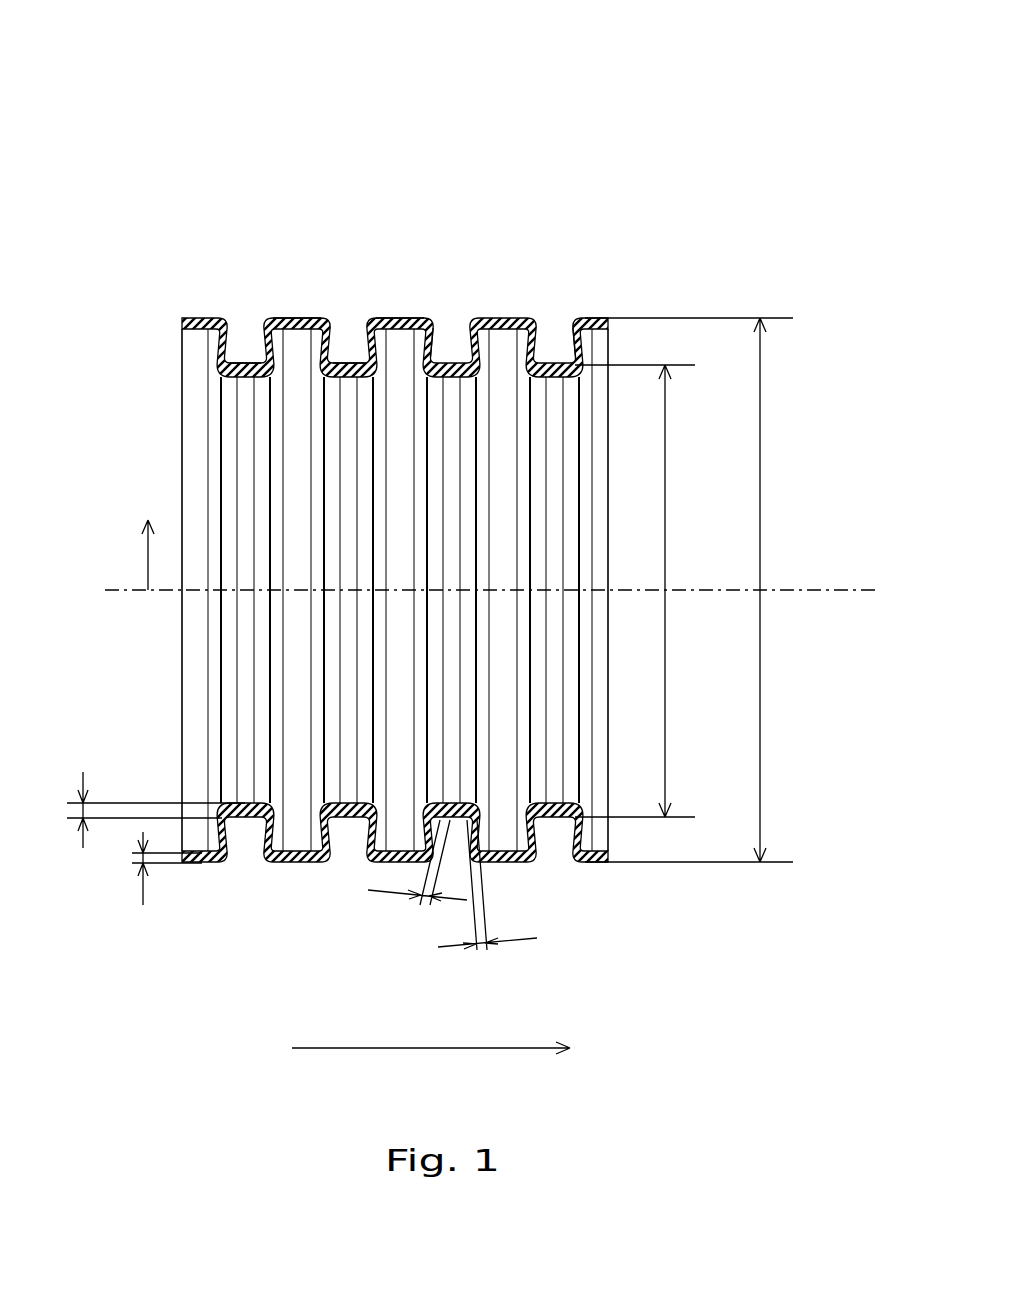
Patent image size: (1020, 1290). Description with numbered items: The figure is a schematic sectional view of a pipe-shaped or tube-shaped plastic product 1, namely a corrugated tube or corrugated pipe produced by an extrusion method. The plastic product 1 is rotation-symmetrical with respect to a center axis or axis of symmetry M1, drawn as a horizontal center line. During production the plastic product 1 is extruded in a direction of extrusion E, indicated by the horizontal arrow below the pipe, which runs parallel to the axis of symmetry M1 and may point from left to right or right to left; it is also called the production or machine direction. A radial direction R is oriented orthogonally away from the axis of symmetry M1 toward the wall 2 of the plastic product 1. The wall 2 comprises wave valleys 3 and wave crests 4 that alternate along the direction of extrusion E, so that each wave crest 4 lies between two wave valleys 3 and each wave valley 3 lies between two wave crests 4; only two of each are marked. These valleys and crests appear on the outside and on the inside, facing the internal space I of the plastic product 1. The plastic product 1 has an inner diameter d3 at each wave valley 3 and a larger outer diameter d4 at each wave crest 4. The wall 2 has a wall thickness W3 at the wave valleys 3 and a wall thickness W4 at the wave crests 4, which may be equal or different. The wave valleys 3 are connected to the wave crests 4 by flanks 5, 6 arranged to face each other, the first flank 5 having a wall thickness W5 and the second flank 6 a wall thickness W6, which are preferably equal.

The plastic product 1 is at (430, 98).
The wall 2 is at (203, 304).
The wave valleys 3 is at (247, 345).
The wave crests 4 is at (297, 318).
The first flank 5 is at (435, 343).
The second flank 6 is at (573, 343).
The internal space I is at (392, 494).
The axis of symmetry M1 is at (843, 588).
The radial direction R is at (135, 555).
The direction of extrusion E is at (431, 1029).
The inner diameter d3 is at (642, 591).
The outer diameter d4 is at (695, 590).
The wall thickness W3 is at (156, 808).
The wall thickness W4 is at (167, 871).
The wall thickness W5 is at (413, 879).
The wall thickness W6 is at (495, 899).